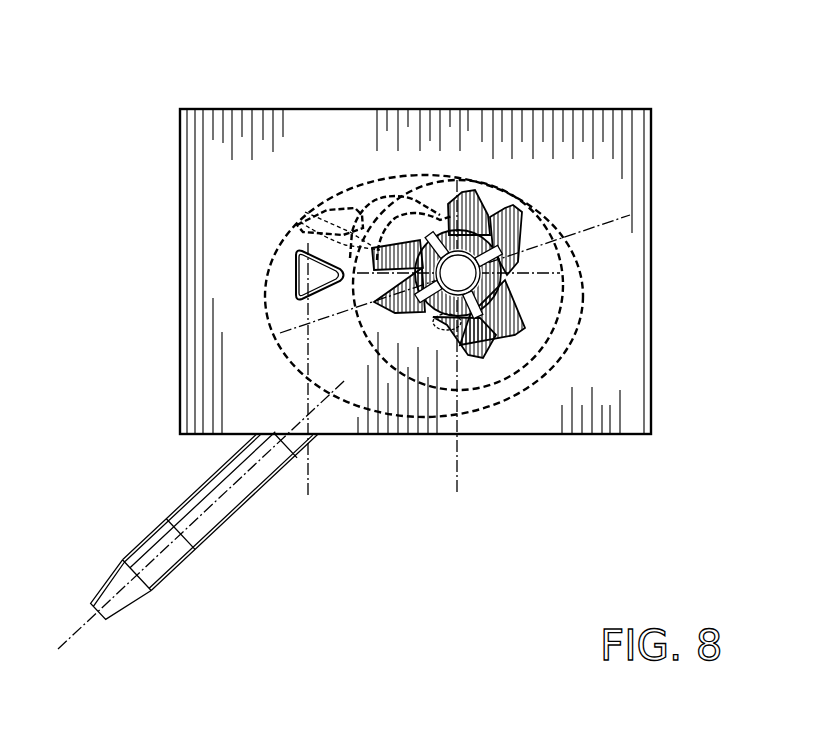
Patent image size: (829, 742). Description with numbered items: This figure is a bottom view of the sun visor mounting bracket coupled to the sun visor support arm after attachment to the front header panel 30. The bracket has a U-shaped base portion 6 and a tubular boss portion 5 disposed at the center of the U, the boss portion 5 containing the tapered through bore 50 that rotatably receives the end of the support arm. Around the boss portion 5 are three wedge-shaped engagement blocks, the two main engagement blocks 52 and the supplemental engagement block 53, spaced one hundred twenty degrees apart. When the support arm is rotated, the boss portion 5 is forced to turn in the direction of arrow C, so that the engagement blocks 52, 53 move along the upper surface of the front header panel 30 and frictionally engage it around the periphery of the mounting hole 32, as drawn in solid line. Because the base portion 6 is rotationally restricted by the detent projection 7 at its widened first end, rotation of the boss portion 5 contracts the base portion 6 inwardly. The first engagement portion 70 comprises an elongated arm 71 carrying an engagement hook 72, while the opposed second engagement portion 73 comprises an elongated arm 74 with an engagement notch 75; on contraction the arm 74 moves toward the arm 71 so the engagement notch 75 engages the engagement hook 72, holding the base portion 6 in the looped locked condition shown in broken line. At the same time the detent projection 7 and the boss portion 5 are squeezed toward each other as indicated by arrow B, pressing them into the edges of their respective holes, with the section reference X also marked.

The front header panel 30 is at (581, 109).
The tapered through bore 50 is at (548, 270).
The main engagement blocks 52 is at (508, 330).
The supplemental engagement block 53 is at (469, 188).
The boss portion 5 is at (497, 182).
The base portion 6 is at (575, 370).
The detent projection 7 is at (296, 262).
The mounting hole 32 is at (545, 237).
The first engagement portion 70 is at (404, 200).
The elongated arm 71 is at (300, 222).
The engagement hook 72 is at (380, 196).
The second engagement portion 73 is at (333, 200).
The elongated arm 74 is at (370, 192).
The engagement notch 75 is at (330, 205).
The arrow B is at (455, 473).
The arrow C is at (617, 303).
The direction X is at (600, 247).